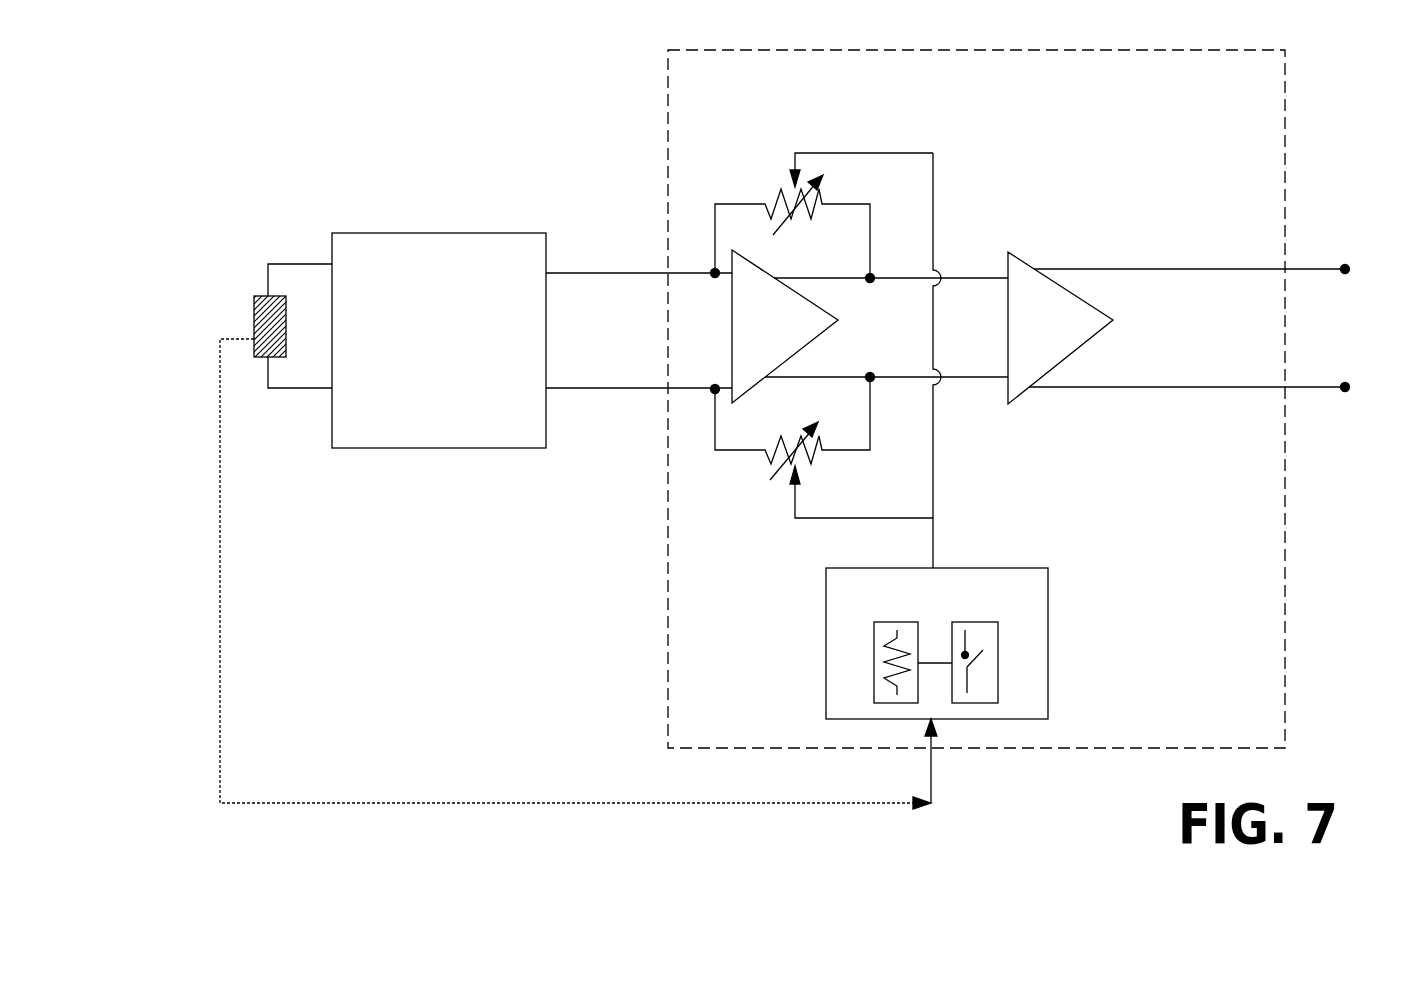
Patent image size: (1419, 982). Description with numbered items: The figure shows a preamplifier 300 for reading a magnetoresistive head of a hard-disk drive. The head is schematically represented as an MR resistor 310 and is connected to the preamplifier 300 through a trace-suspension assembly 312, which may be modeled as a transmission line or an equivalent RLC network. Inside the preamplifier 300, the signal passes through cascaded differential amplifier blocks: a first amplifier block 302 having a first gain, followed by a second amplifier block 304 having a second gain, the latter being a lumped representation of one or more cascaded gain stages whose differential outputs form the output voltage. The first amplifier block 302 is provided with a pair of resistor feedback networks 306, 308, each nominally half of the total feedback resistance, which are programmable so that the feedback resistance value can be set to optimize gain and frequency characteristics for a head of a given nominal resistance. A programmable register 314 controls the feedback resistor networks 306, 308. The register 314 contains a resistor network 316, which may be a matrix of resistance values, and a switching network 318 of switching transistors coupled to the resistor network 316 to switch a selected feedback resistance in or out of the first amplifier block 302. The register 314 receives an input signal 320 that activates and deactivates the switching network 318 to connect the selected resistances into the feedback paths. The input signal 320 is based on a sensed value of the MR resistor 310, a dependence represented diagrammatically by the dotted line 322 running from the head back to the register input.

The preamplifier 300 is at (721, 49).
The first amplifier block 302 is at (822, 335).
The second amplifier block 304 is at (1090, 340).
The resistor feedback network 306 is at (803, 243).
The resistor feedback network 308 is at (777, 423).
The MR resistor 310 is at (256, 296).
The trace-suspension assembly 312 is at (456, 233).
The programmable register 314 is at (1017, 568).
The resistor network 316 is at (875, 670).
The switching network 318 is at (998, 670).
The input signal 320 is at (931, 770).
The dotted line 322 is at (221, 560).